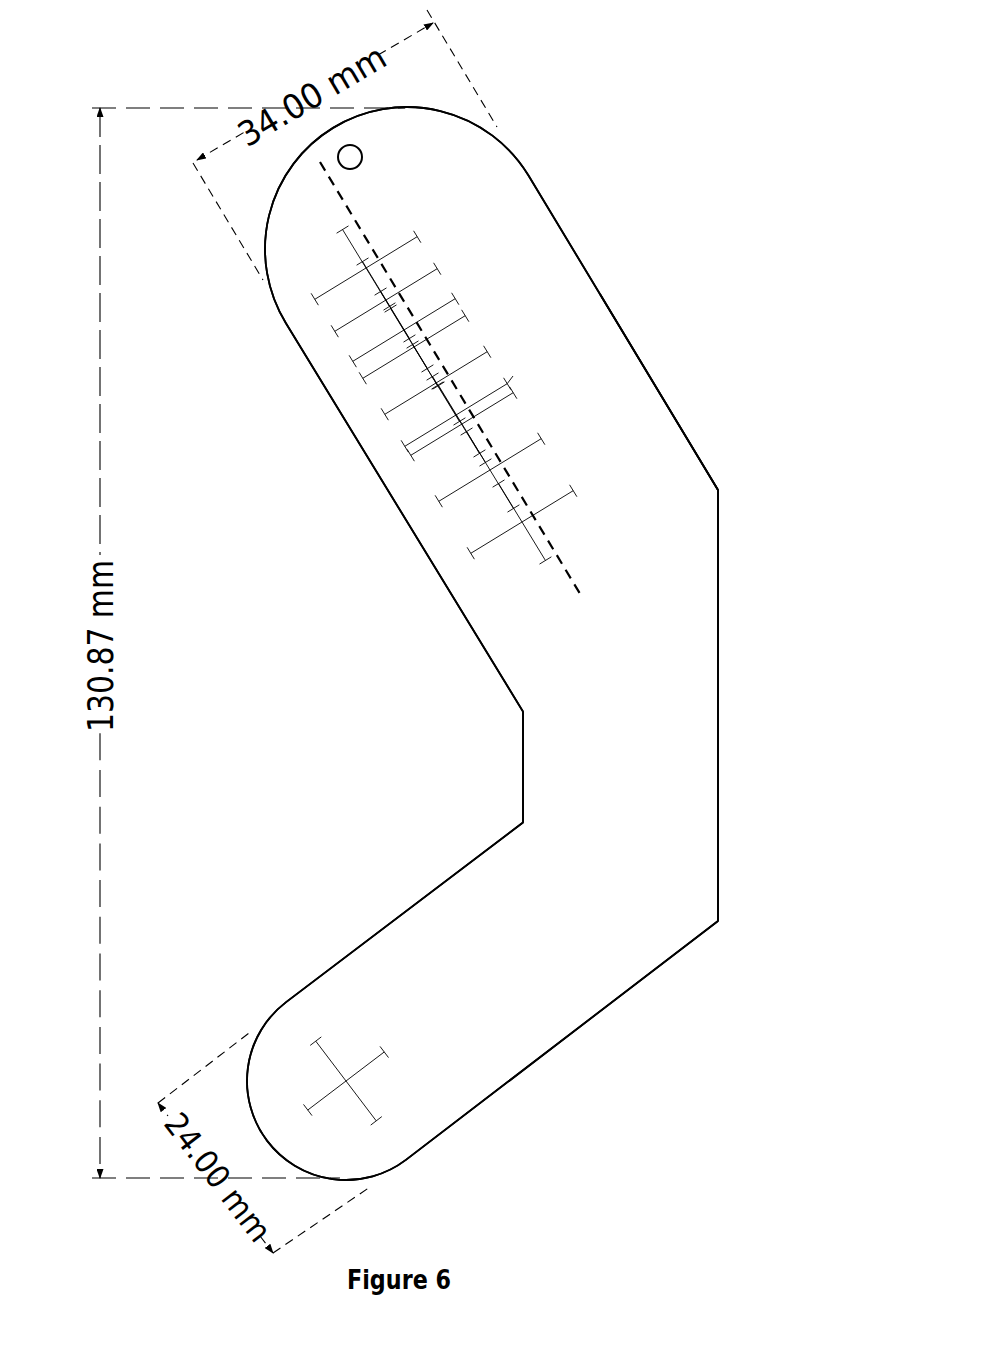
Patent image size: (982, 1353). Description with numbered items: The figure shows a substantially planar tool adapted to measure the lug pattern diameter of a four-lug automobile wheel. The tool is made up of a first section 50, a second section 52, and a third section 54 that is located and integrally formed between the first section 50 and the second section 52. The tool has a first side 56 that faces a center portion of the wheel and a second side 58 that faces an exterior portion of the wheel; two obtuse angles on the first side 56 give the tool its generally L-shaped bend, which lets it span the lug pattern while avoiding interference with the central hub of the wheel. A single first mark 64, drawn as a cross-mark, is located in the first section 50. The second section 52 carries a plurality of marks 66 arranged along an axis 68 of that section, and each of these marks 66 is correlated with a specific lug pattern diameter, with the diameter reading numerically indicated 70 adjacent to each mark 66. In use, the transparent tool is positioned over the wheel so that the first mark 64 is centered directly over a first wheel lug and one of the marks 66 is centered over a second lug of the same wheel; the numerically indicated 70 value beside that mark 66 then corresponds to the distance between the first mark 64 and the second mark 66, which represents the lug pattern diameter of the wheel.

The first section 50 is at (672, 1018).
The second section 52 is at (633, 252).
The third section 54 is at (764, 698).
The first side 56 is at (515, 770).
The second side 58 is at (736, 770).
The first mark 64 is at (372, 1085).
The marks 66 is at (362, 280).
The axis 68 is at (469, 397).
The numerically indicated diameter 70 is at (655, 435).